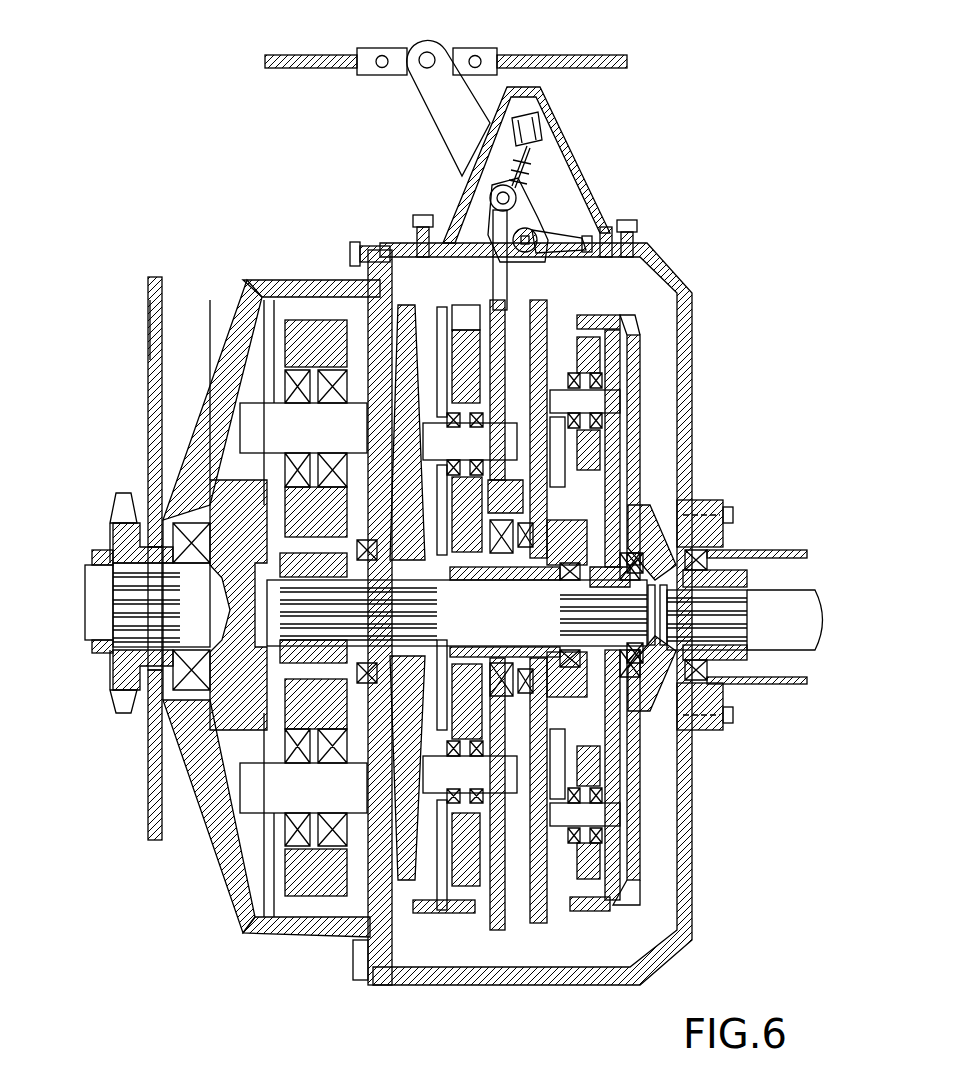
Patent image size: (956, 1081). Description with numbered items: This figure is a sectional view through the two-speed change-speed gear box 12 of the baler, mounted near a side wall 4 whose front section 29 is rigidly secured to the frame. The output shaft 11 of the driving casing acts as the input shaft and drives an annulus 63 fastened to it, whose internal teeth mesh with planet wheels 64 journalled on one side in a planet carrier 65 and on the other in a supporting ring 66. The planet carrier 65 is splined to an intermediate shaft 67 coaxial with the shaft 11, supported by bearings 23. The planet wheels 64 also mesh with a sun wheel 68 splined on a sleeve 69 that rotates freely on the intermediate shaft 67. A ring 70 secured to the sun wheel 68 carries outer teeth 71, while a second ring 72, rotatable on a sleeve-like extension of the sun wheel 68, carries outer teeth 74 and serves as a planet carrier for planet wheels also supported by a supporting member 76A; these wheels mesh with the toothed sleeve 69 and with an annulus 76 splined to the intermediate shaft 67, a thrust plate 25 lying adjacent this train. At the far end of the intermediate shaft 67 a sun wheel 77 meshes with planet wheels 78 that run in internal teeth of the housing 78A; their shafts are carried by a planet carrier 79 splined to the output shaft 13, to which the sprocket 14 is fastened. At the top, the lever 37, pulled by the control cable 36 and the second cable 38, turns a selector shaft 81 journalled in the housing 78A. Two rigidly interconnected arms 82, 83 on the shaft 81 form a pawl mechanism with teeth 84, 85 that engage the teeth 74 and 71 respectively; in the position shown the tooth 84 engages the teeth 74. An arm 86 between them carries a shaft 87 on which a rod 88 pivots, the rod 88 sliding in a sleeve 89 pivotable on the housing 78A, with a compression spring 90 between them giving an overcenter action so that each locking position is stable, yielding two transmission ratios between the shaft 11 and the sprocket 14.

The side wall 4 is at (140, 351).
The output shaft 11 is at (787, 612).
The two-speed gear box 12 is at (711, 321).
The output shaft 13 is at (205, 608).
The sprocket 14 is at (123, 494).
The bearing 23 is at (508, 553).
The thrust plate 25 is at (448, 308).
The front section 29 is at (169, 369).
The control cable 36 is at (605, 58).
The lever 37 is at (428, 86).
The cable 38 is at (287, 53).
The annulus 63 is at (565, 450).
The planet wheels 64 is at (600, 345).
The planet carrier 65 is at (640, 436).
The supporting ring 66 is at (612, 458).
The intermediate shaft 67 is at (492, 628).
The sun wheel 68 is at (575, 525).
The sleeve 69 is at (528, 647).
The ring 70 is at (553, 312).
The teeth 71 is at (553, 300).
The second ring 72 is at (500, 328).
The teeth 74 is at (475, 305).
The annulus 76 is at (425, 340).
The supporting ring 76A is at (422, 345).
The sun wheel 77 is at (292, 568).
The planet wheels 78 is at (290, 338).
The housing 78A is at (286, 278).
The planet carrier 79 is at (236, 505).
The selector shaft 81 is at (538, 232).
The arm 82 is at (497, 252).
The arm 83 is at (604, 230).
The tooth 84 is at (498, 290).
The tooth 85 is at (587, 256).
The arm 86 is at (528, 225).
The shaft 87 is at (496, 200).
The rod 88 is at (508, 160).
The sleeve 89 is at (541, 134).
The compression spring 90 is at (536, 151).